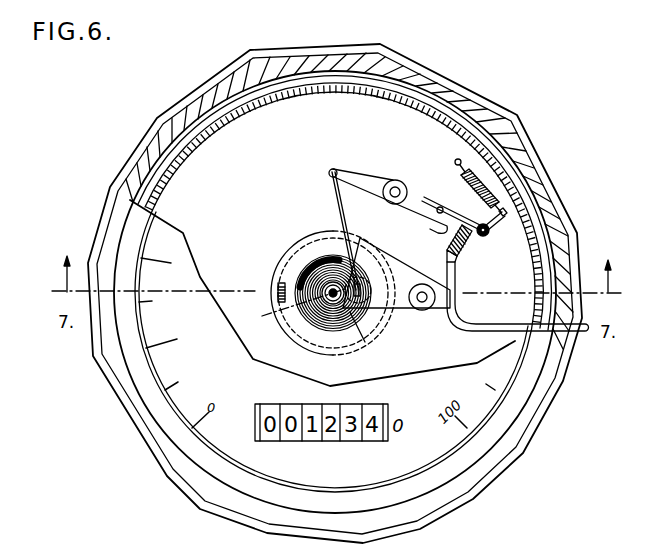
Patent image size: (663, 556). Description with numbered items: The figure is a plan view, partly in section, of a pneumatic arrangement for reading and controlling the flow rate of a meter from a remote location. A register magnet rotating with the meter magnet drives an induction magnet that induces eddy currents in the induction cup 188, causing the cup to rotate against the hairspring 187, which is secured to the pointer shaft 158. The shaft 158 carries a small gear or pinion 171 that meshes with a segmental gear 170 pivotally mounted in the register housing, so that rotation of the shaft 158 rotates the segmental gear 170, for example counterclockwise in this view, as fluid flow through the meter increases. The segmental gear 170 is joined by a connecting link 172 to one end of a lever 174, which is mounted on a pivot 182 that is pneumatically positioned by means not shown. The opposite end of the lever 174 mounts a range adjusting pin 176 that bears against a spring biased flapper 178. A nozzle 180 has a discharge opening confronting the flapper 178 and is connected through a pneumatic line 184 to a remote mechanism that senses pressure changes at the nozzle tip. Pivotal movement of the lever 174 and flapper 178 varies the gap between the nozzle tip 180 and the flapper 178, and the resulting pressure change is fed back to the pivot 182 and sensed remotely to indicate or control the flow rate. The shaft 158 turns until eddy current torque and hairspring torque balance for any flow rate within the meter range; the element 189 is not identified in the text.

The pointer shaft 158 is at (333, 300).
The segmental gear 170 is at (412, 306).
The small gear 171 is at (287, 308).
The connecting link 172 is at (341, 212).
The lever 174 is at (368, 172).
The range adjusting pin 176 is at (440, 214).
The flapper 178 is at (437, 199).
The nozzle 180 is at (468, 244).
The pivot 182 is at (392, 198).
The pneumatic line 184 is at (505, 333).
The hairspring 187 is at (312, 268).
The induction cup 188 is at (300, 276).
The spring anchor 189 is at (278, 287).